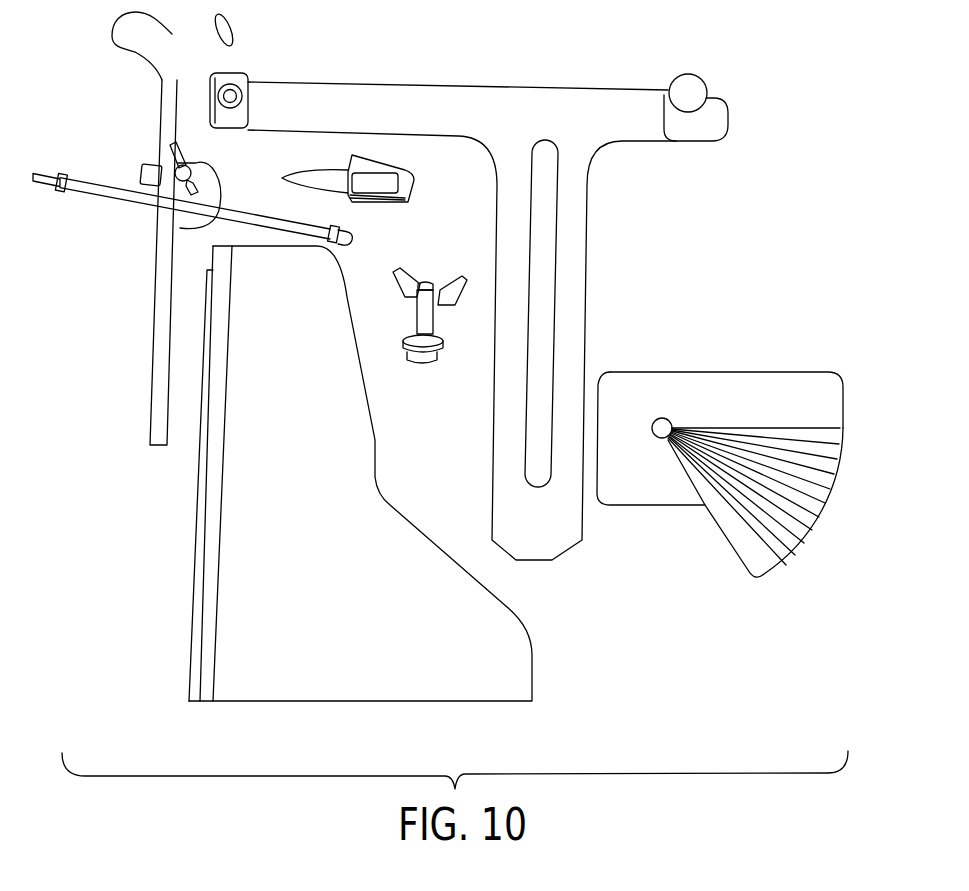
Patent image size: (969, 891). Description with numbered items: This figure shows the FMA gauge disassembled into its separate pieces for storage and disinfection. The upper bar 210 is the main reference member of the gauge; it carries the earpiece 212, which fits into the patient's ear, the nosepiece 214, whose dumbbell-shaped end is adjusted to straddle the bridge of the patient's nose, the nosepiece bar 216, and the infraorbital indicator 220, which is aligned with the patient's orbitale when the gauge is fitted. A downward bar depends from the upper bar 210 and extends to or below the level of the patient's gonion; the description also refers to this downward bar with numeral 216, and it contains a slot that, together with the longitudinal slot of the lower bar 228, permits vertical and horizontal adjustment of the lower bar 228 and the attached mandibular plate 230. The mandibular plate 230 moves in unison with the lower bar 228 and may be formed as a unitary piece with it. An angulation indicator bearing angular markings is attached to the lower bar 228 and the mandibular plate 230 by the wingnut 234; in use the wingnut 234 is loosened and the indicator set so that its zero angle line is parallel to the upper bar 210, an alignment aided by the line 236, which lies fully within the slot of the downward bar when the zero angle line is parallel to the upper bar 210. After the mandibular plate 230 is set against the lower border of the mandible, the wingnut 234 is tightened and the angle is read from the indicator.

The upper bar 210 is at (322, 97).
The earpiece 212 is at (692, 85).
The nosepiece 214 is at (153, 317).
The nosepiece bar 216 is at (93, 197).
The infraorbital indicator 220 is at (414, 182).
The lower bar 228 is at (193, 582).
The mandibular plate 230 is at (313, 688).
The wingnut 234 is at (428, 312).
The line 236 is at (833, 398).